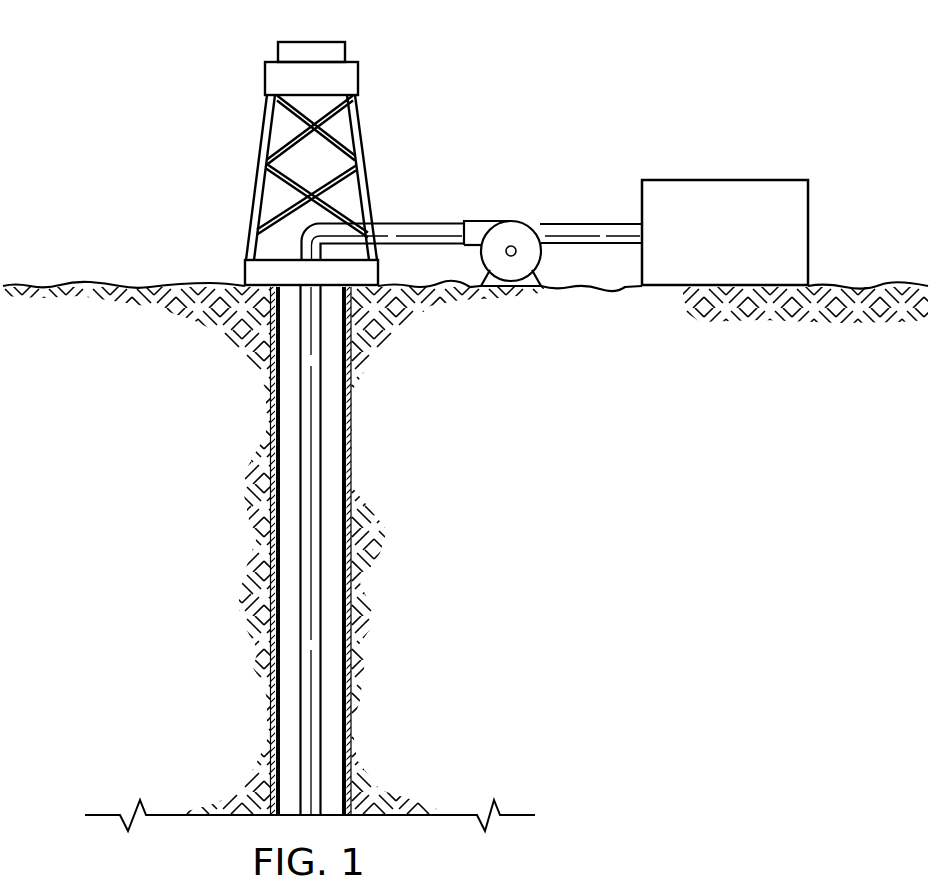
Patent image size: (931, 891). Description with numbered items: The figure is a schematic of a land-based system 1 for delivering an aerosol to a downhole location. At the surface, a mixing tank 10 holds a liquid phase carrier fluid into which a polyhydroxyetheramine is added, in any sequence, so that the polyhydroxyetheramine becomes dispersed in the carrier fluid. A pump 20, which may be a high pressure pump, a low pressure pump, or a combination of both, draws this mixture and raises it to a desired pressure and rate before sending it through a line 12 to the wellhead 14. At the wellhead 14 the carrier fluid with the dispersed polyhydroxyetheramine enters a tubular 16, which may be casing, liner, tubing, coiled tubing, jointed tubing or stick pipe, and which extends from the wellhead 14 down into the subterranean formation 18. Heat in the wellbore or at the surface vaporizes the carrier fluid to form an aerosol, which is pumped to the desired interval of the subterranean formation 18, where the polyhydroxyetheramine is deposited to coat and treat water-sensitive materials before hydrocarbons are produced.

The system 1 is at (200, 78).
The mixing tank 10 is at (723, 180).
The line 12 is at (415, 223).
The wellhead 14 is at (245, 272).
The tubular 16 is at (300, 678).
The subterranean formation 18 is at (207, 542).
The pump 20 is at (513, 221).